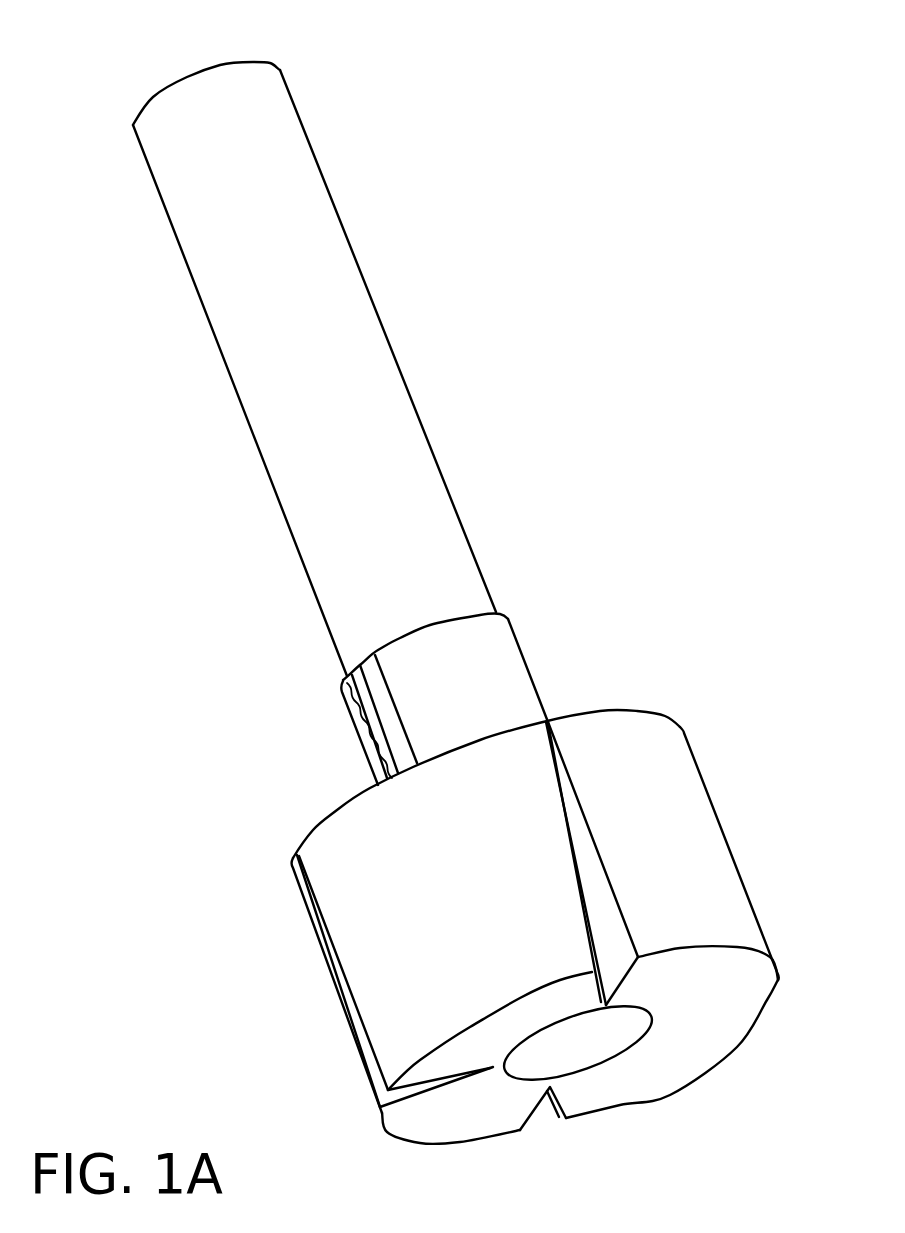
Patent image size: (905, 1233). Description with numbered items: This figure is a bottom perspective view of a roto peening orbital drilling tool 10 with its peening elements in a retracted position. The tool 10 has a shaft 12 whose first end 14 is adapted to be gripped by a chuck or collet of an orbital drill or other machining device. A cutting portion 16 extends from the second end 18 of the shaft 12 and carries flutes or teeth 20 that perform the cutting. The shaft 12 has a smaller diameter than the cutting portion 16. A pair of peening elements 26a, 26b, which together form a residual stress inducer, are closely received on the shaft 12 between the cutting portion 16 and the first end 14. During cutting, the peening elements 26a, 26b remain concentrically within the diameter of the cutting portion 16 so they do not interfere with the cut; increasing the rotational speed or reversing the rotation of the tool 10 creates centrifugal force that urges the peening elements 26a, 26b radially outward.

The roto peening orbital drilling tool 10 is at (460, 577).
The shaft 12 is at (319, 342).
The first end 14 is at (278, 64).
The cutting portion 16 is at (460, 928).
The second end 18 is at (590, 1035).
The flutes or teeth 20 is at (602, 918).
The peening element 26a is at (396, 658).
The peening element 26b is at (330, 721).